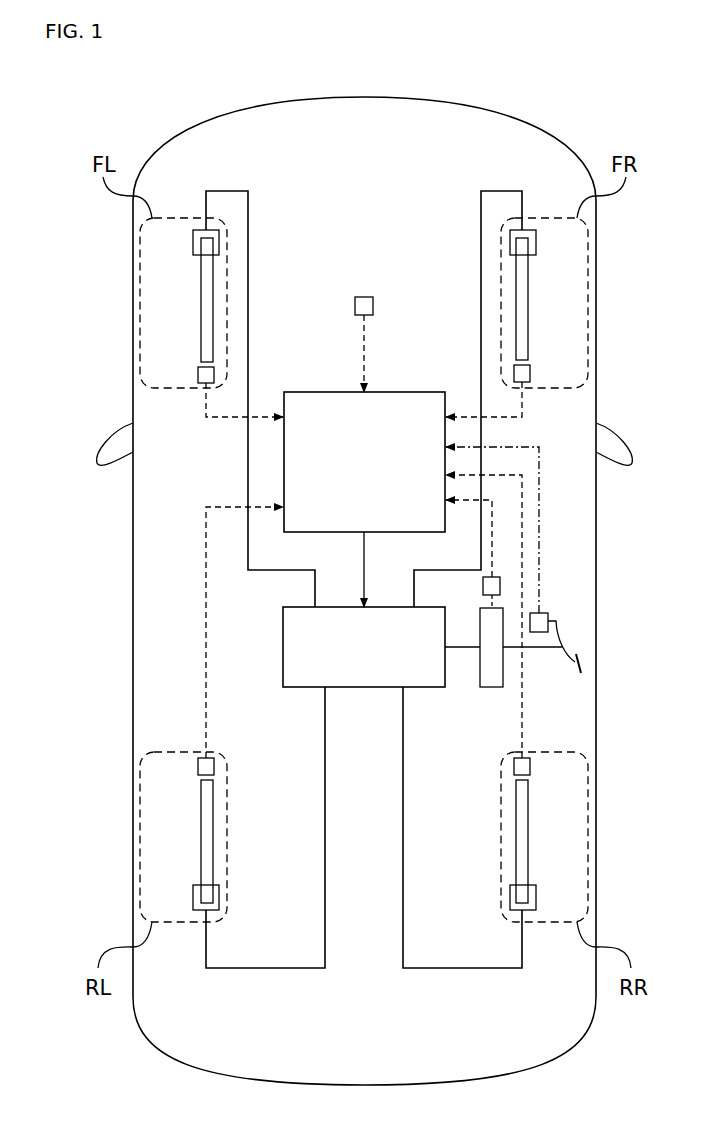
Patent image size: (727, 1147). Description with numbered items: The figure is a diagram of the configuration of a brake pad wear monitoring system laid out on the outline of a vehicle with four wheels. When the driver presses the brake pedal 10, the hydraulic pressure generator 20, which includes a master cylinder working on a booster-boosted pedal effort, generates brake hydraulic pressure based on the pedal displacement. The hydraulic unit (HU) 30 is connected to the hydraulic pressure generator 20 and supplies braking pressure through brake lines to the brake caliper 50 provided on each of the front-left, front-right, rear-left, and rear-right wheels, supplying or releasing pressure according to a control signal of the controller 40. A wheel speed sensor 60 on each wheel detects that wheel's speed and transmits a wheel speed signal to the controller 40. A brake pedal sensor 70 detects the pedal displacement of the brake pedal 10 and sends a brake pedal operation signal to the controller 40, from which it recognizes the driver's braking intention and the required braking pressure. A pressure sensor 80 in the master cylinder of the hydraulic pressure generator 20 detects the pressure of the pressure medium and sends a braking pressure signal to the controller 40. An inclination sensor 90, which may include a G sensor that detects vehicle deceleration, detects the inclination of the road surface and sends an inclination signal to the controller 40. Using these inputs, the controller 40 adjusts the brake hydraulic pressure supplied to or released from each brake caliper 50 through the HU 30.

The brake pedal 10 is at (568, 667).
The hydraulic pressure generator 20 is at (491, 690).
The hydraulic unit (HU) 30 is at (283, 651).
The controller 40 is at (420, 392).
The brake caliper 50 is at (193, 243).
The wheel speed sensor 60 is at (198, 375).
The brake pedal sensor 70 is at (548, 612).
The pressure sensor 80 is at (483, 585).
The inclination sensor 90 is at (365, 296).